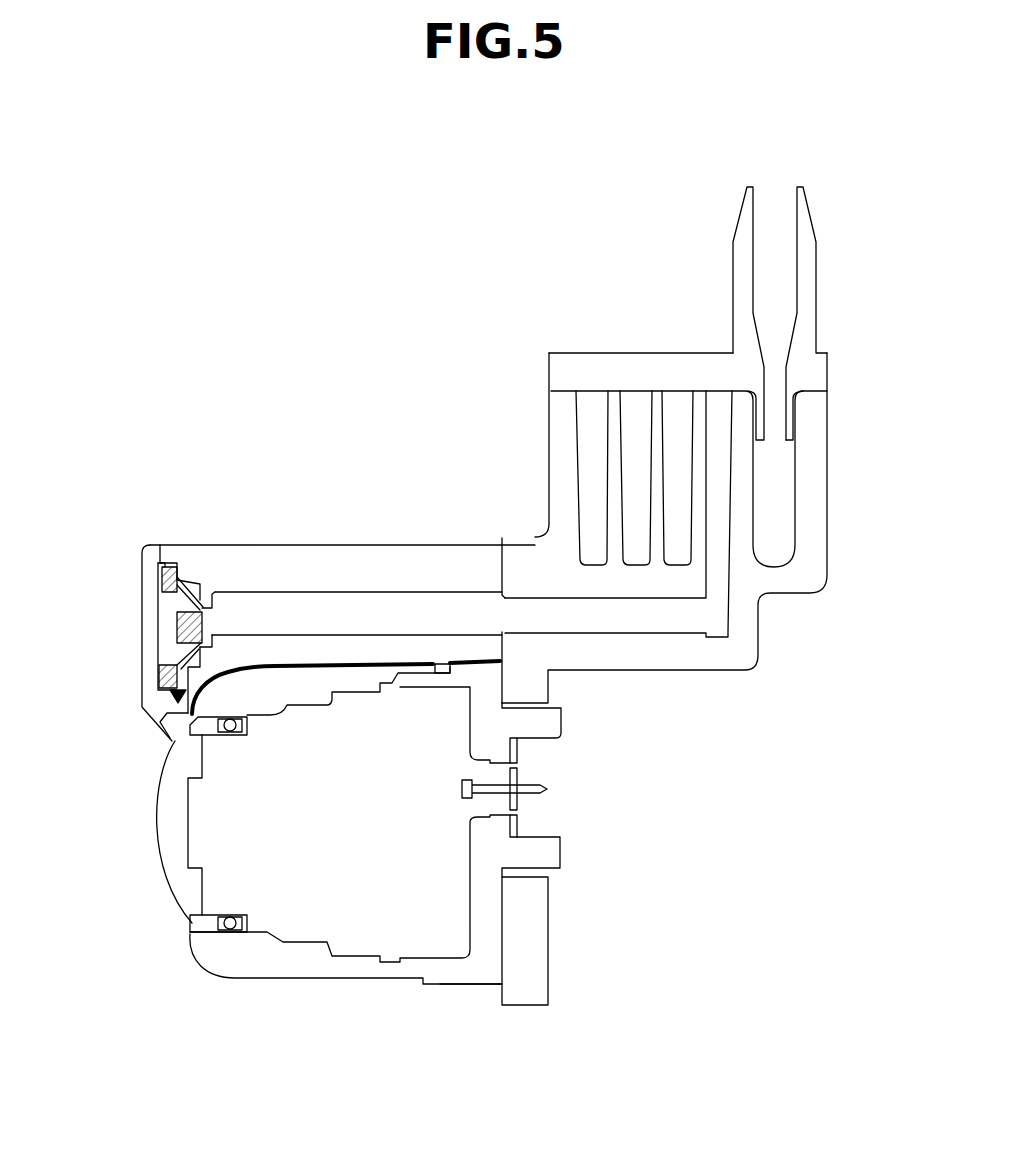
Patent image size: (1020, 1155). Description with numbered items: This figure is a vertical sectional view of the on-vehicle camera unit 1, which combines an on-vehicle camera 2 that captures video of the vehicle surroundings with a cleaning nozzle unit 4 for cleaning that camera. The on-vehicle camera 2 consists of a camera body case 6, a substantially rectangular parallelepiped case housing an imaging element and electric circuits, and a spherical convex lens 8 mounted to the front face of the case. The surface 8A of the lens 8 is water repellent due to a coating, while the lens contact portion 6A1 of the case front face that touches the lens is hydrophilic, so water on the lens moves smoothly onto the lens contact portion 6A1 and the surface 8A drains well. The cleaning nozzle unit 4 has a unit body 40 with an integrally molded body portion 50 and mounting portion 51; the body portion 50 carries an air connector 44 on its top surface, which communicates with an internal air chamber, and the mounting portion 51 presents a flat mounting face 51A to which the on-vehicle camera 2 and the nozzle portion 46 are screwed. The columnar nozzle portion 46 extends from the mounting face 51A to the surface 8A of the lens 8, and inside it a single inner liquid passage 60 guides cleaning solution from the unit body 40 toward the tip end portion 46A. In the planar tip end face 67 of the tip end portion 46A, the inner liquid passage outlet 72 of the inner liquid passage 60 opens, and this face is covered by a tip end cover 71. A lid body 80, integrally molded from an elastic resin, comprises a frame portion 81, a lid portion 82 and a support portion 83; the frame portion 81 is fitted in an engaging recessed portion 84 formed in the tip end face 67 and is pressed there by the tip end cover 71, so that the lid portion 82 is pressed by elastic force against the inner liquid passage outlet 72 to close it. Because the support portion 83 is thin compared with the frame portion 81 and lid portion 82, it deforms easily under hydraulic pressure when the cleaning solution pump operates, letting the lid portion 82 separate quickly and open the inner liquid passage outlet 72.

The on-vehicle camera unit 1 is at (486, 181).
The on-vehicle camera 2 is at (257, 1018).
The cleaning nozzle unit 4 is at (479, 411).
The camera body case 6 is at (333, 980).
The lens contact portion 6A1 is at (188, 925).
The lens 8 is at (178, 892).
The surface of the lens 8A is at (160, 858).
The unit body 40 is at (765, 718).
The air connector 44 is at (826, 266).
The nozzle portion 46 is at (434, 522).
The tip end portion 46A is at (150, 513).
The body portion 50 is at (647, 672).
The mounting portion 51 is at (548, 953).
The mounting face 51A is at (500, 993).
The inner liquid passage 60 is at (391, 611).
The tip end face 67 is at (172, 697).
The tip end cover 71 is at (147, 658).
The inner liquid passage outlet 72 is at (212, 596).
The lid body 80 is at (80, 507).
The frame portion 81 is at (161, 578).
The lid portion 82 is at (166, 633).
The support portion 83 is at (176, 602).
The engaging recessed portion 84 is at (170, 562).